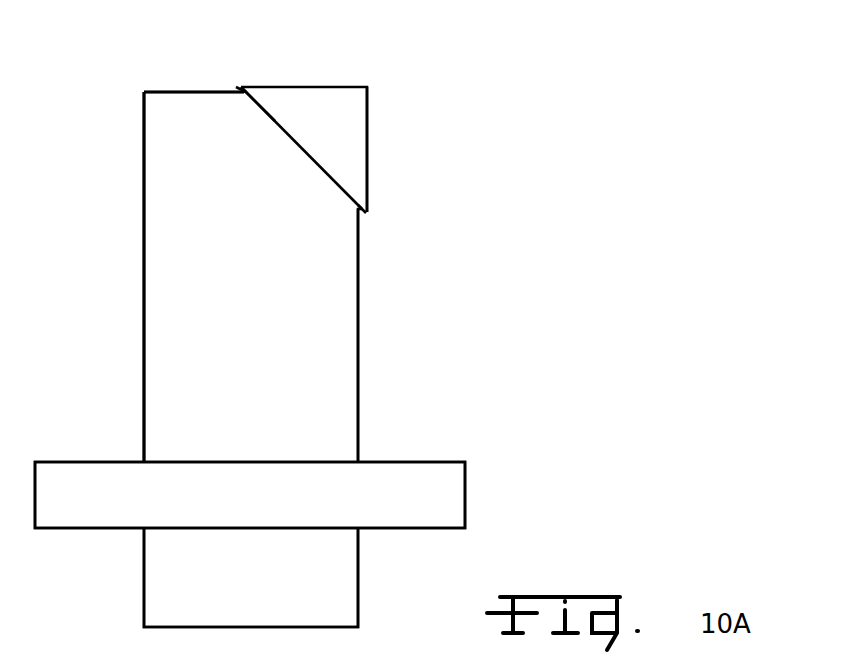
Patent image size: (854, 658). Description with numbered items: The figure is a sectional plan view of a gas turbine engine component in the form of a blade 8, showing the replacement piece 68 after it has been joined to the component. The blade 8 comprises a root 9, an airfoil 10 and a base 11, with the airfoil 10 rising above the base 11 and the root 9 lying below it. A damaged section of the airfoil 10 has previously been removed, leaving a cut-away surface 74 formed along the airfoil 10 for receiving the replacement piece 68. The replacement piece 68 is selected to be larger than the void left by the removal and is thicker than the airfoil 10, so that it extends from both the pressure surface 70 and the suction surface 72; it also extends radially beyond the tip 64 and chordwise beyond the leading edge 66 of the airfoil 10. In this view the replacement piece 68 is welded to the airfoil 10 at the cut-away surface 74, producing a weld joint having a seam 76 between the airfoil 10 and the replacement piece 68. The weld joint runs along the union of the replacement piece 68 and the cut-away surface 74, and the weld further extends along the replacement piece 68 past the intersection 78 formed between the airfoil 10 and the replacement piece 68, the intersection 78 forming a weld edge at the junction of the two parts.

The blade 8 is at (504, 511).
The root 9 is at (358, 583).
The airfoil 10 is at (122, 94).
The base 11 is at (466, 487).
The tip 64 is at (158, 92).
The leading edge 66 is at (358, 351).
The replacement piece 68 is at (368, 137).
The pressure surface 70 is at (265, 333).
The suction surface 72 is at (138, 262).
The cut-away surface 74 is at (300, 142).
The seam 76 is at (271, 114).
The intersection 78 is at (236, 86).